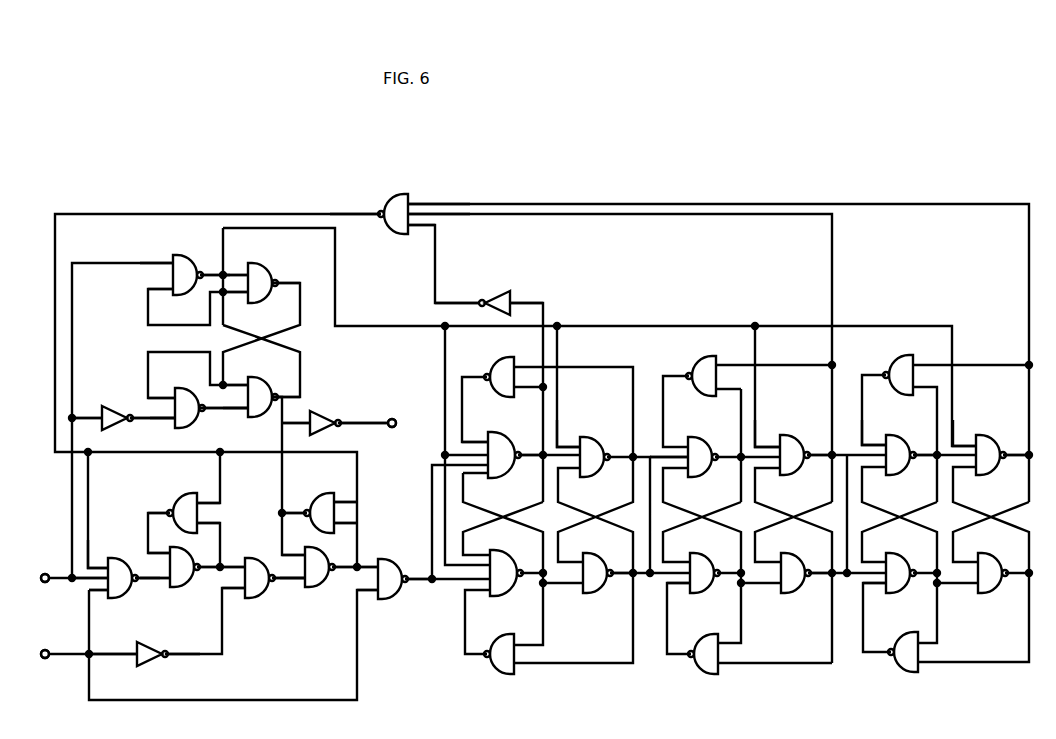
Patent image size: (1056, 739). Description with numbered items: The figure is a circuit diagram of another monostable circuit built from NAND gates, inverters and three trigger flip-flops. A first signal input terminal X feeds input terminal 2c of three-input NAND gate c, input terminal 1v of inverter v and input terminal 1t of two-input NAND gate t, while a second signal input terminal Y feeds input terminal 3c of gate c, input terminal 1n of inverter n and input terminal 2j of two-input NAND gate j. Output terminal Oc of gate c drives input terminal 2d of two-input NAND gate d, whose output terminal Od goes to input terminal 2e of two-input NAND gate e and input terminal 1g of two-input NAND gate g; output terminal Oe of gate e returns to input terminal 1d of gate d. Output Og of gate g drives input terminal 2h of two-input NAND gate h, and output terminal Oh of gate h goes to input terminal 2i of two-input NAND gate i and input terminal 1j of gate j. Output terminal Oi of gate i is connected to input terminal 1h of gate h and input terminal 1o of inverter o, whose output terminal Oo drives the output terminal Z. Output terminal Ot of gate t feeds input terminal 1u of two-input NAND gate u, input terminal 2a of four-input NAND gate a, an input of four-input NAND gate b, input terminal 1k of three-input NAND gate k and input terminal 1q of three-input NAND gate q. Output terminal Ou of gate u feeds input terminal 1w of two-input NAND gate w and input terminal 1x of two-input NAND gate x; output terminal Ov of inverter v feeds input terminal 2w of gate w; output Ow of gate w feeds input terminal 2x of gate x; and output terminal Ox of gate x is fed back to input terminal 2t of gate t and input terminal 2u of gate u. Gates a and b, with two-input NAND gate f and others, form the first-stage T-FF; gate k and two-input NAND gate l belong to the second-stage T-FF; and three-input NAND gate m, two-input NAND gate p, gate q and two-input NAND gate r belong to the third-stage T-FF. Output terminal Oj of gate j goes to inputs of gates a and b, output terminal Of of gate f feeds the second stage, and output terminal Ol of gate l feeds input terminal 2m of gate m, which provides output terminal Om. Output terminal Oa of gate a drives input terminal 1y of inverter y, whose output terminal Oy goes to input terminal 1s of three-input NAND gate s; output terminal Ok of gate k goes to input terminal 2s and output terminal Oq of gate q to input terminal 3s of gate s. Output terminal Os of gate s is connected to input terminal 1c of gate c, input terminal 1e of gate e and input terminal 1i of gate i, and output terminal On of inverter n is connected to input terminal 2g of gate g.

The 2-input NAND gate t is at (190, 256).
The input terminal of NAND gate t 1t is at (168, 258).
The input terminal of NAND gate t 2t is at (168, 295).
The output terminal of NAND gate t Ot is at (205, 280).
The 2-input NAND gate u is at (265, 263).
The input terminal of NAND gate u 1u is at (242, 270).
The input terminal of NAND gate u 2u is at (243, 298).
The output terminal of NAND gate u Ou is at (284, 279).
The 3-input NAND gate s is at (393, 234).
The output terminal of NAND gate s Os is at (376, 209).
The input terminal of NAND gate s 2s is at (418, 200).
The input terminal of NAND gate s 3s is at (425, 208).
The input terminal of NAND gate s 1s is at (418, 230).
The inverter y is at (500, 290).
The output terminal of inverter y Oy is at (472, 298).
The input terminal of inverter y 1y is at (522, 298).
The inverter v is at (112, 408).
The input terminal of inverter v 1v is at (90, 414).
The output terminal of inverter v Ov is at (136, 414).
The 2-input NAND gate w is at (190, 388).
The input terminal of NAND gate w 1w is at (170, 394).
The input terminal of NAND gate w 2w is at (172, 424).
The output terminal of NAND gate w Ow is at (208, 414).
The 2-input NAND gate x is at (265, 377).
The input terminal of NAND gate x 1x is at (243, 380).
The input terminal of NAND gate x 2x is at (243, 414).
The output terminal of NAND gate x Ox is at (280, 401).
The inverter o is at (325, 413).
The input terminal of inverter o 1o is at (305, 419).
The output terminal of inverter o Oo is at (346, 419).
The output terminal Z is at (395, 418).
The 2-input NAND gate e is at (183, 493).
The output terminal of NAND gate e Oe is at (165, 508).
The input terminal of NAND gate e 1e is at (210, 498).
The 2-input NAND gate i is at (322, 493).
The output terminal of NAND gate i Oi is at (300, 508).
The input terminal of NAND gate i 1i is at (345, 497).
The input terminal of NAND gate i 2i is at (352, 519).
The first signal input terminal X is at (45, 573).
The second signal input terminal Y is at (45, 649).
The 3-input NAND gate c is at (125, 558).
The input terminal of NAND gate c 1c is at (105, 562).
The output terminal of NAND gate c Oc is at (140, 573).
The input terminal of NAND gate c 2c is at (95, 584).
The input terminal of NAND gate c 3c is at (100, 595).
The 2-input NAND gate d is at (185, 587).
The input terminal of NAND gate d 1d is at (165, 548).
The input terminal of NAND gate d 2d is at (166, 584).
The output terminal of NAND gate d Od is at (205, 572).
The input terminal of NAND gate e 2e is at (210, 528).
The 2-input NAND gate g is at (262, 558).
The input terminal of NAND gate g 1g is at (240, 562).
The input terminal of NAND gate g 2g is at (240, 594).
The output terminal of NAND gate g Og is at (278, 583).
The 2-input NAND gate h is at (322, 587).
The input terminal of NAND gate h 1h is at (300, 550).
The input terminal of NAND gate h 2h is at (300, 584).
The output terminal of NAND gate h Oh is at (338, 562).
The 2-input NAND gate j is at (395, 599).
The input terminal of NAND gate j 1j is at (372, 562).
The input terminal of NAND gate j 2j is at (372, 596).
The output terminal of NAND gate j Oj is at (412, 574).
The inverter n is at (152, 664).
The input terminal of inverter n 1n is at (130, 659).
The output terminal of inverter n On is at (180, 659).
The 4-input NAND gate a is at (503, 478).
The input terminal of NAND gate a 2a is at (484, 437).
The output terminal of NAND gate a Oa is at (525, 450).
The 4-input NAND gate b is at (504, 596).
The 2-input NAND gate f is at (598, 553).
The output terminal of NAND gate f Of is at (615, 578).
The 3-input NAND gate k is at (795, 435).
The input terminal of NAND gate k 1k is at (772, 442).
The output terminal of NAND gate k Ok is at (814, 450).
The 2-input NAND gate l is at (796, 573).
The output terminal of NAND gate l Ol is at (812, 578).
The 3-input NAND gate m is at (902, 435).
The input terminal of NAND gate m 2m is at (880, 441).
The output terminal of NAND gate m Om is at (918, 460).
The 2-input NAND gate p is at (910, 672).
The 3-input NAND gate q is at (992, 435).
The input terminal of NAND gate q 1q is at (966, 441).
The output terminal of NAND gate q Oq is at (1008, 460).
The 2-input NAND gate r is at (995, 593).